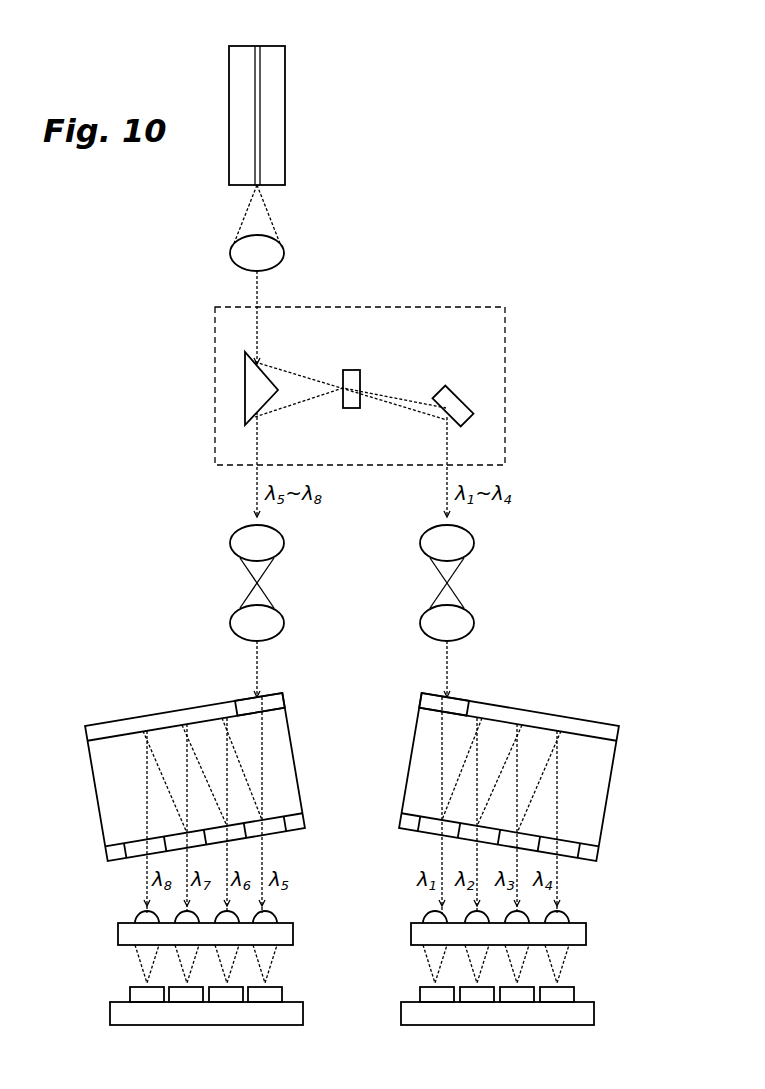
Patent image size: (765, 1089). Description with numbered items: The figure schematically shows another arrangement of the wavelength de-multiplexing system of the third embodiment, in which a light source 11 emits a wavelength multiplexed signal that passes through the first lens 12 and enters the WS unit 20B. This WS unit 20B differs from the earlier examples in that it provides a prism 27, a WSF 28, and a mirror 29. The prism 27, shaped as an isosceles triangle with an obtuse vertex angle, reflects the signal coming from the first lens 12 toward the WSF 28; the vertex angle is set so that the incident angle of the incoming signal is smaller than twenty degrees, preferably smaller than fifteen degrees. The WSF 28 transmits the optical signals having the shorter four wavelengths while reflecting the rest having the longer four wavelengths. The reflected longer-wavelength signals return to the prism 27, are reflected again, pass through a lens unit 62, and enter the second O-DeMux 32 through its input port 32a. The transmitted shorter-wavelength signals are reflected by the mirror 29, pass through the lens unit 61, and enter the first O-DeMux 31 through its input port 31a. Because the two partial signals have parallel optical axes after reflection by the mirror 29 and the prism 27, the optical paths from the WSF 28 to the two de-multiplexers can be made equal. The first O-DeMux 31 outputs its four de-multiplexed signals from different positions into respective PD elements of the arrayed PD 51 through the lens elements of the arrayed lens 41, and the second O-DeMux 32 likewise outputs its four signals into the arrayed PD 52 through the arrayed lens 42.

The light source (semiconductor laser) 11 is at (262, 95).
The first lens 12 is at (284, 253).
The WS unit 20B is at (505, 395).
The prism 27 is at (245, 383).
The WSF 28 is at (352, 370).
The mirror 29 is at (461, 390).
The lens unit 61 is at (470, 584).
The relay lens pair 62 is at (240, 586).
The first O-DeMux 31 is at (515, 783).
The input port 31a is at (456, 694).
The second O-DeMux 32 is at (189, 783).
The input port 32a is at (248, 694).
The arrayed lens 41 is at (586, 932).
The arrayed lens 42 is at (118, 932).
The arrayed PD 51 is at (594, 1013).
The arrayed PD 52 is at (110, 1013).